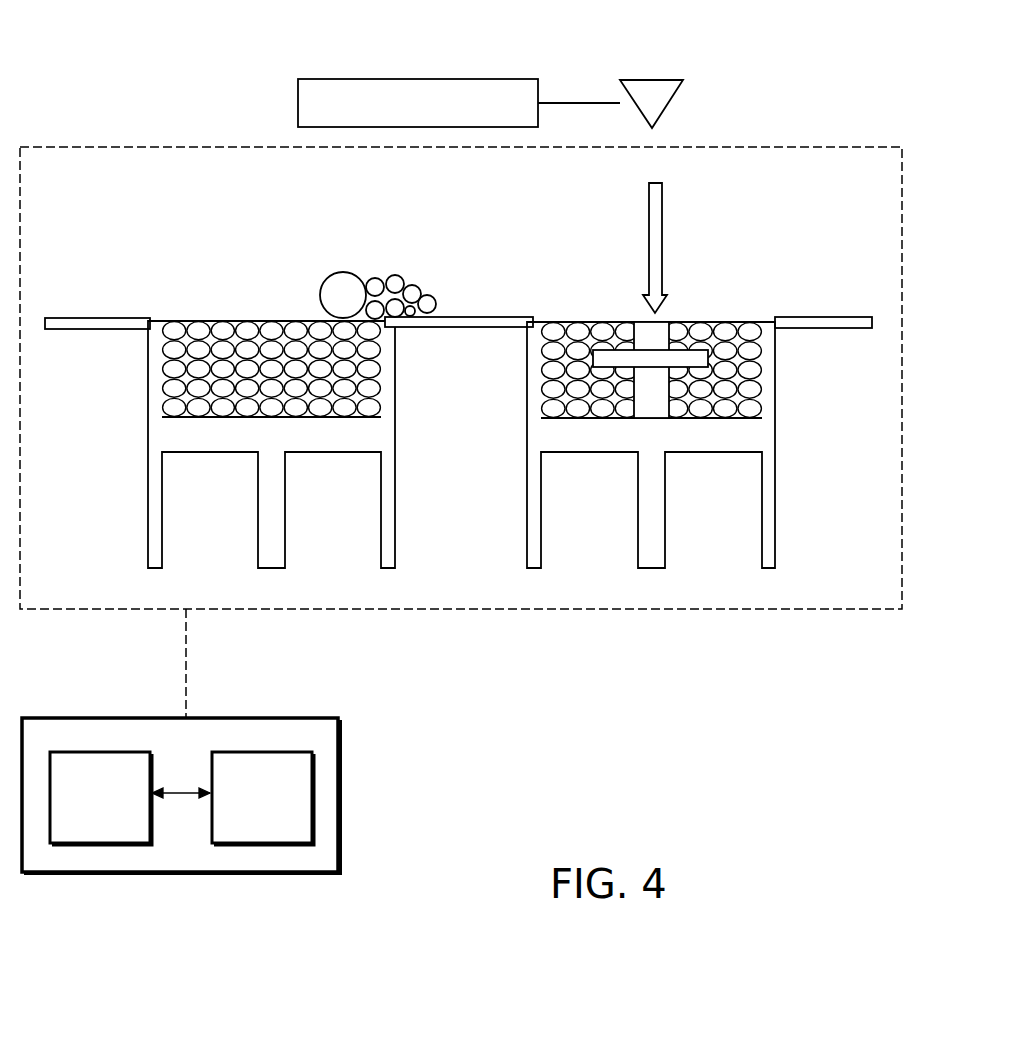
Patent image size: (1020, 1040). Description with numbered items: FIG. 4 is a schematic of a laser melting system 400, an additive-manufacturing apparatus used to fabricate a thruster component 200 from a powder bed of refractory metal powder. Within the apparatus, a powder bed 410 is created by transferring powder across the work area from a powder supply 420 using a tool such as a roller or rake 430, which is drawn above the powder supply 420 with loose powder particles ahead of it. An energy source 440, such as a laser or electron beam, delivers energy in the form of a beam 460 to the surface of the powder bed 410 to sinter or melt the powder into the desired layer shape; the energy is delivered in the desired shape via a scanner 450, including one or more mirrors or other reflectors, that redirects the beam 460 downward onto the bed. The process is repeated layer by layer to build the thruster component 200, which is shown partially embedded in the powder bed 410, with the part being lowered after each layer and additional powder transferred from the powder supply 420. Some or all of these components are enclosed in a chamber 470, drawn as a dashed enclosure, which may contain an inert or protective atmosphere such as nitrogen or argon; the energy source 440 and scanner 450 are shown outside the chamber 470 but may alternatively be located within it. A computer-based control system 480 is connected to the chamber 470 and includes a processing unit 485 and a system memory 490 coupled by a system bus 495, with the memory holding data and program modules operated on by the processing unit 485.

The laser melting system 400 is at (132, 58).
The energy source 440 is at (379, 78).
The scanner 450 is at (651, 79).
The chamber 470 is at (796, 146).
The beam 460 is at (663, 218).
The thruster component 200 is at (673, 322).
The powder bed 410 is at (800, 376).
The powder supply 420 is at (150, 378).
The roller or rake 430 is at (320, 283).
The control system 480 is at (338, 795).
The processing unit 485 is at (282, 820).
The system memory 490 is at (120, 808).
The system bus 495 is at (176, 793).